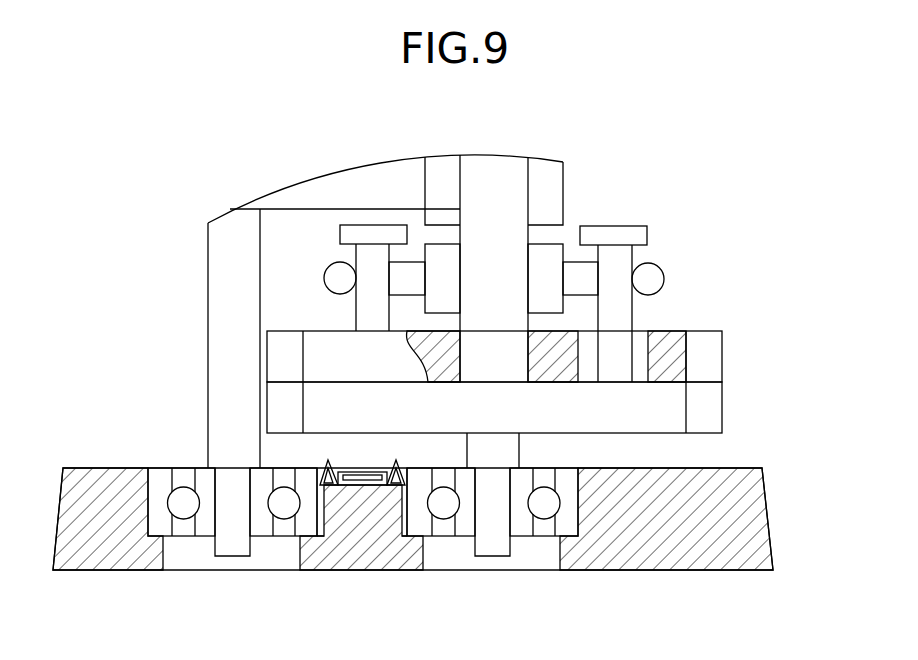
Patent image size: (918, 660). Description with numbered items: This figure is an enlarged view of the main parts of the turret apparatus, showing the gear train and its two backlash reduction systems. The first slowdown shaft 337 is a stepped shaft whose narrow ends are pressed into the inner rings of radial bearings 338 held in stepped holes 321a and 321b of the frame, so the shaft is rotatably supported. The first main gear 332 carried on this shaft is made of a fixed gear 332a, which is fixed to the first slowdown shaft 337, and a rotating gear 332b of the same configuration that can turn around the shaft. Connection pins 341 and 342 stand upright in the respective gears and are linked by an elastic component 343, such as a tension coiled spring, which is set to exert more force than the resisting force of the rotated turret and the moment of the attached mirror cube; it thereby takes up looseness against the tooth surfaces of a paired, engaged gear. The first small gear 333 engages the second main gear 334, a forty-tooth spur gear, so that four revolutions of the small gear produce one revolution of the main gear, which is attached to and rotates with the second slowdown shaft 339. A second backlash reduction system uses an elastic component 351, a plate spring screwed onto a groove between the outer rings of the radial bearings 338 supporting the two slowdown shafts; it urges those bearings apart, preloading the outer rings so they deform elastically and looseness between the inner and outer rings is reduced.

The stepped hole 321a is at (423, 557).
The stepped hole 321b is at (163, 553).
The first main gear 332 is at (570, 382).
The fixed gear 332a is at (715, 407).
The rotating gear 332b is at (715, 353).
The first small gear 333 is at (555, 183).
The second main gear 334 is at (385, 167).
The first slowdown shaft 337 is at (493, 168).
The radial bearing 338 is at (260, 528).
The second slowdown shaft 339 is at (220, 258).
The connection pin 341 is at (618, 254).
The connection pin 342 is at (363, 237).
The elastic component 343 is at (665, 277).
The elastic component 351 is at (355, 486).